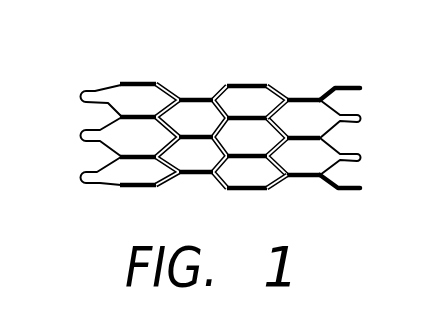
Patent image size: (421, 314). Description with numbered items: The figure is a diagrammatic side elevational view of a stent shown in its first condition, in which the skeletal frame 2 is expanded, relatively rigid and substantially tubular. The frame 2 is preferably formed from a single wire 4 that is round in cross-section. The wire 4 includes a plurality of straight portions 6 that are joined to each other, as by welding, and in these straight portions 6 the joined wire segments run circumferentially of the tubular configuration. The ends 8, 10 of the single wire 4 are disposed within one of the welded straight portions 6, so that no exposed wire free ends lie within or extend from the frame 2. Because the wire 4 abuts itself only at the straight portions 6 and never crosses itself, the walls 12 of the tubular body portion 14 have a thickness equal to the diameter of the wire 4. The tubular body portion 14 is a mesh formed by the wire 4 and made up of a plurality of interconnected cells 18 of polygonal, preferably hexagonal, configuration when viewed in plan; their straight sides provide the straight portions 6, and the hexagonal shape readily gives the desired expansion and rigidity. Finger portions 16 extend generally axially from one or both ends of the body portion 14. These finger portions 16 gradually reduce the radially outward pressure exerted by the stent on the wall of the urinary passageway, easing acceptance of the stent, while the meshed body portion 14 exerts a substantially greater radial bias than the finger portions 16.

The skeletal frame 2 is at (75, 39).
The single wire 4 is at (243, 86).
The straight portions 6 is at (198, 99).
The end of the single wire 8 is at (238, 189).
The end of the single wire 10 is at (256, 190).
The walls 12 is at (134, 186).
The tubular body portion 14 is at (148, 84).
The finger portions 16 is at (363, 119).
The cells 18 is at (300, 64).